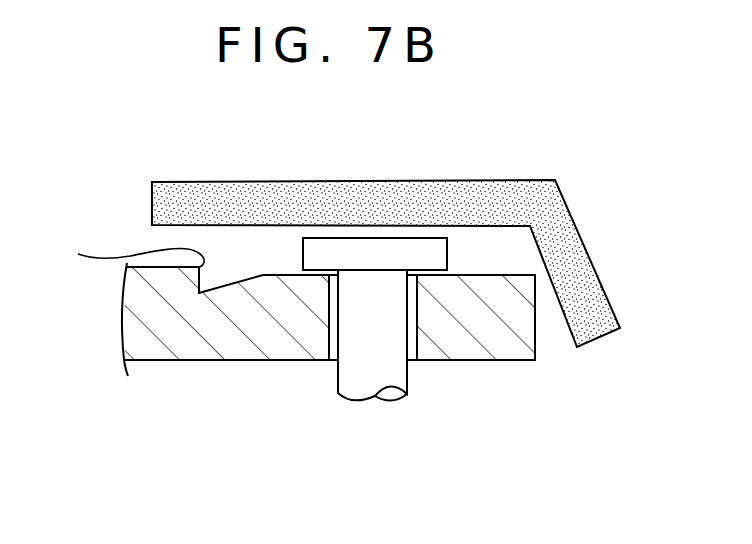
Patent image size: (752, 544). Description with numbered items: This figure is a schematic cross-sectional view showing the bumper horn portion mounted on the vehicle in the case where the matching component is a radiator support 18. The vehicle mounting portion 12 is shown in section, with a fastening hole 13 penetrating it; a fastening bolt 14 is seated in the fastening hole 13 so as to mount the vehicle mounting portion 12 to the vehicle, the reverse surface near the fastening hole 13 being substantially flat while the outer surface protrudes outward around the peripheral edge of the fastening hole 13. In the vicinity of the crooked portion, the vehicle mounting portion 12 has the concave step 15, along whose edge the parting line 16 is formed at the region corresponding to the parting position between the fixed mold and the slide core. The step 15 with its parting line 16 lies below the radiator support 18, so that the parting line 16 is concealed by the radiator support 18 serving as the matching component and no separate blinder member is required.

The vehicle mounting portion 12 is at (525, 361).
The fastening hole 13 is at (411, 361).
The fastening bolt 14 is at (303, 254).
The step 15 is at (201, 279).
The parting line 16 is at (125, 254).
The radiator support 18 is at (392, 190).